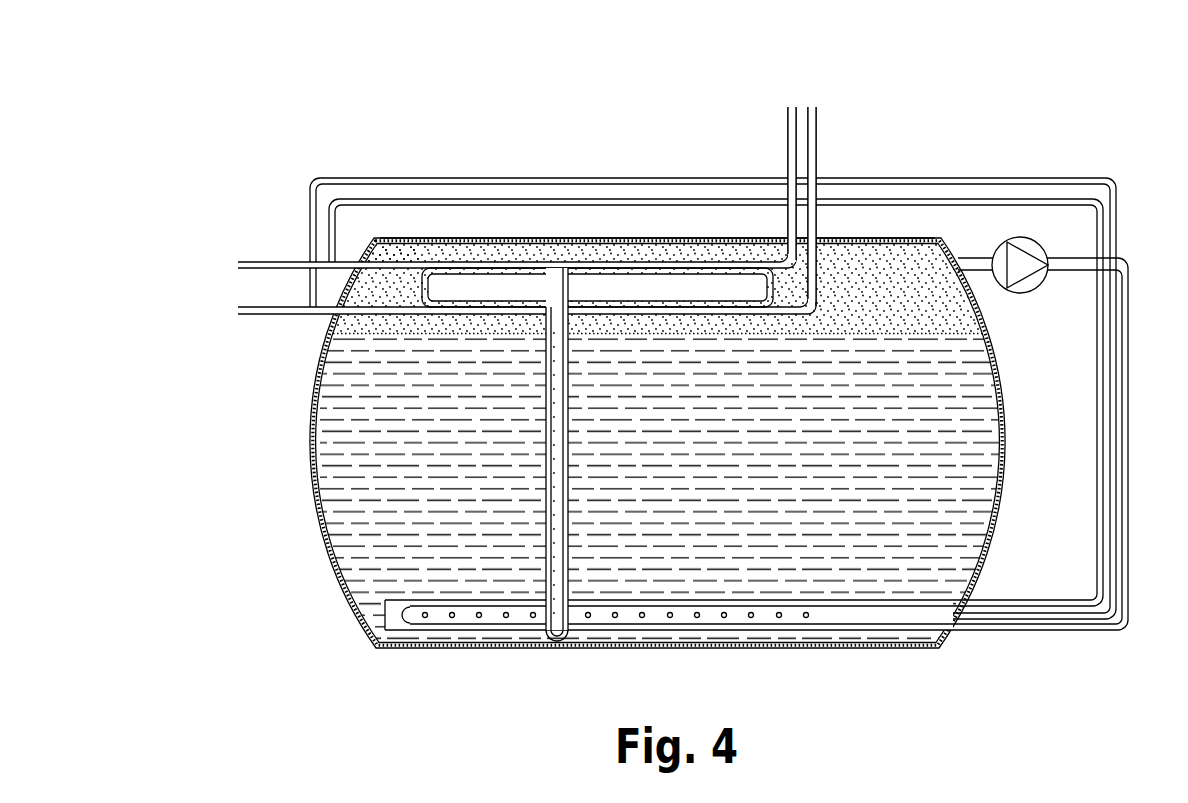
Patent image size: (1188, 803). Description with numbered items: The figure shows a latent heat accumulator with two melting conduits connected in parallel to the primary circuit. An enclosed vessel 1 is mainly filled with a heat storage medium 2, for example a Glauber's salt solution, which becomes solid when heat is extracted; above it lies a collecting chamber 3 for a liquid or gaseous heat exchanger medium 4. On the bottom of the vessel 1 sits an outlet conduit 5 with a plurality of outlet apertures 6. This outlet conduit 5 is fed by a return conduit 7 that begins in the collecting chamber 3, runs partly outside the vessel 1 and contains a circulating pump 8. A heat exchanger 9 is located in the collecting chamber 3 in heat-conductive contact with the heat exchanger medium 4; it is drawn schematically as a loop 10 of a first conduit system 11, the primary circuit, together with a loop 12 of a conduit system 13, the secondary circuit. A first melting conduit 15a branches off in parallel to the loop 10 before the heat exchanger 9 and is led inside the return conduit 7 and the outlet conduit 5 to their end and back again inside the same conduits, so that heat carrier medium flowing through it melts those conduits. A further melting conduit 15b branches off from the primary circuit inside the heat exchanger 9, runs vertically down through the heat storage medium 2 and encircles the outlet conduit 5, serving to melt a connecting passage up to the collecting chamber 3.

The vessel 1 is at (317, 493).
The heat storage medium 2 is at (348, 440).
The collecting chamber 3 is at (830, 268).
The heat exchanger medium 4 is at (872, 268).
The outlet conduit 5 is at (776, 628).
The outlet apertures 6 is at (835, 615).
The return conduit 7 is at (1130, 392).
The circulating pump 8 is at (1032, 285).
The heat exchanger 9 is at (603, 240).
The loop 10 is at (413, 265).
The first conduit system 11 is at (232, 283).
The loop 12 is at (630, 315).
The conduit system 13 is at (800, 98).
The first melting conduit 15a is at (509, 183).
The further melting conduit 15b is at (570, 458).